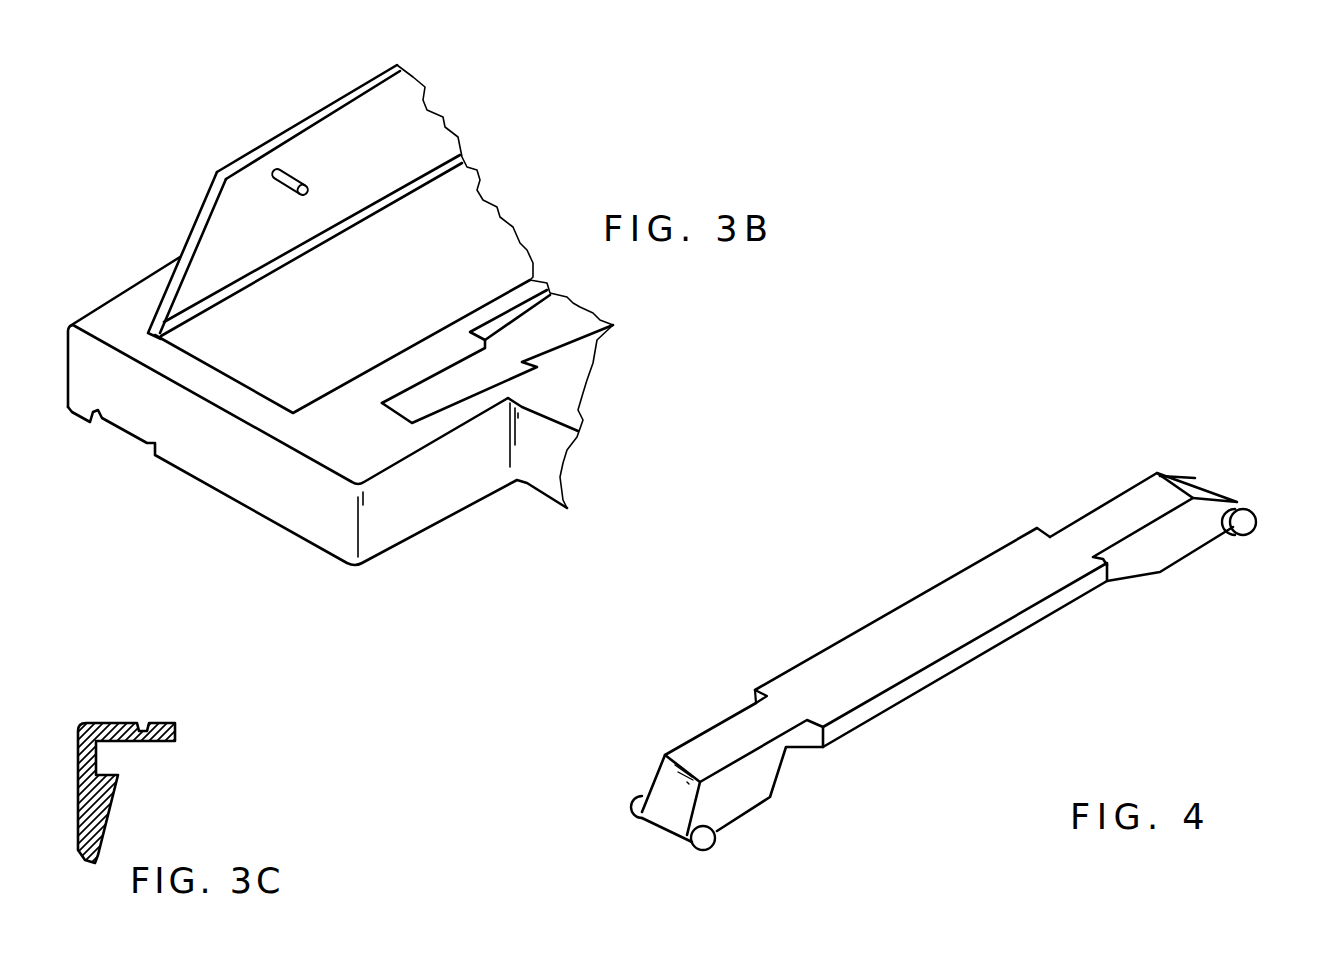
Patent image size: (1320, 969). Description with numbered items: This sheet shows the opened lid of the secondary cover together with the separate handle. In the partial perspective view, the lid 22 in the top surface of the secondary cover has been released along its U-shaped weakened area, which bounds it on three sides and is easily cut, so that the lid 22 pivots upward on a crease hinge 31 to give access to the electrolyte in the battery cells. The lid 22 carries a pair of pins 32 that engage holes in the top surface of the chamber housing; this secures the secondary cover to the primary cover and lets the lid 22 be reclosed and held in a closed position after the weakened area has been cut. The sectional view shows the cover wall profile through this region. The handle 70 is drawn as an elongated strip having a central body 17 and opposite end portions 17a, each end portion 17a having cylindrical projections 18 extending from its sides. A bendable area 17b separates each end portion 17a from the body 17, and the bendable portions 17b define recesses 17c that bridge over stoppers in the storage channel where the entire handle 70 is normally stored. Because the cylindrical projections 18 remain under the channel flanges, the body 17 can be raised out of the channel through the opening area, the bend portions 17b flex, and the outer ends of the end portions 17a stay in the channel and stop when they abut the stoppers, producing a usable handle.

In FIG. 3B, the lid 22 is at (232, 215).
In FIG. 3B, the crease hinge 31 is at (158, 330).
In FIG. 3B, the pins 32 is at (308, 196).
In FIG. 4, the handle 70 is at (966, 663).
In FIG. 4, the central body 17 is at (955, 635).
In FIG. 4, the end portions 17a is at (718, 753).
In FIG. 4, the bendable area 17b is at (773, 720).
In FIG. 4, the recesses 17c is at (800, 743).
In FIG. 4, the cylindrical projections 18 is at (703, 840).